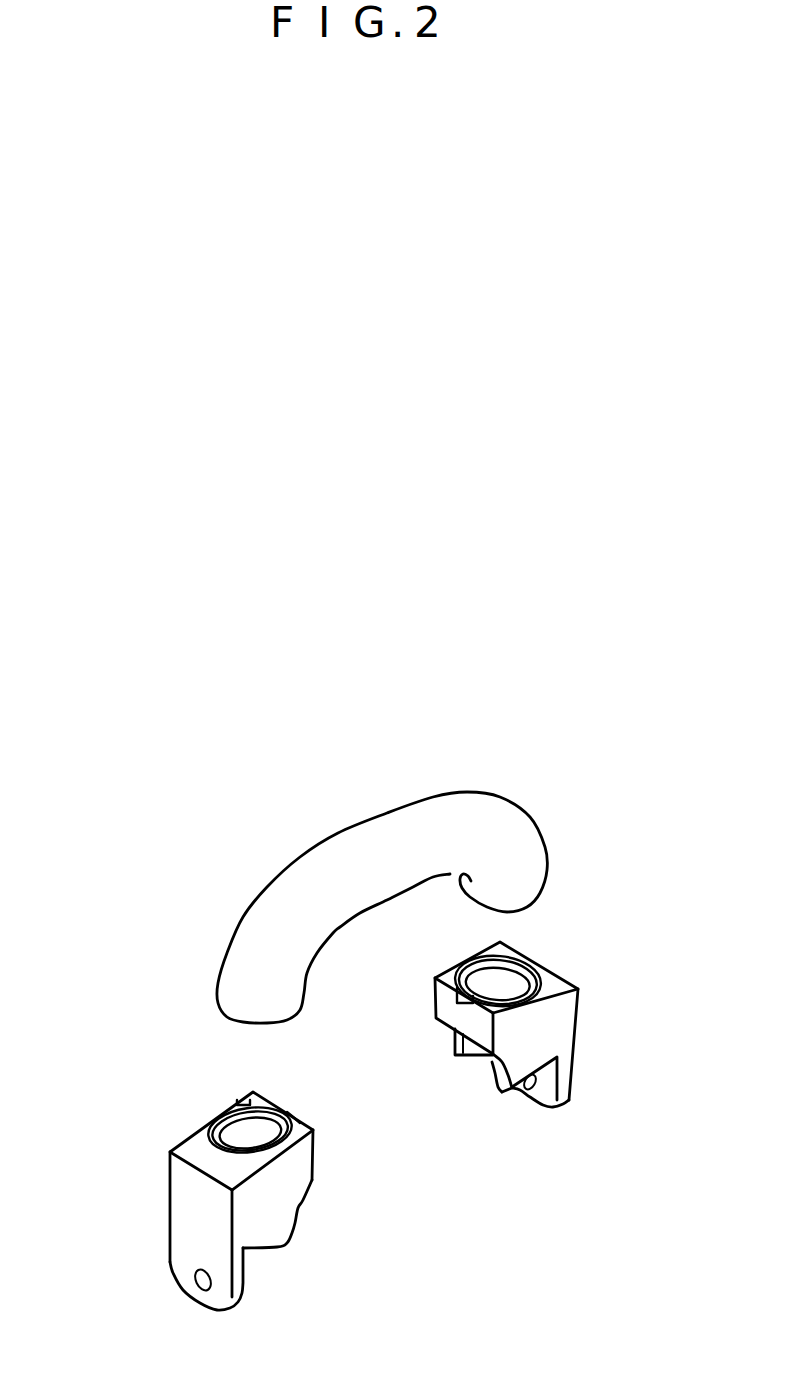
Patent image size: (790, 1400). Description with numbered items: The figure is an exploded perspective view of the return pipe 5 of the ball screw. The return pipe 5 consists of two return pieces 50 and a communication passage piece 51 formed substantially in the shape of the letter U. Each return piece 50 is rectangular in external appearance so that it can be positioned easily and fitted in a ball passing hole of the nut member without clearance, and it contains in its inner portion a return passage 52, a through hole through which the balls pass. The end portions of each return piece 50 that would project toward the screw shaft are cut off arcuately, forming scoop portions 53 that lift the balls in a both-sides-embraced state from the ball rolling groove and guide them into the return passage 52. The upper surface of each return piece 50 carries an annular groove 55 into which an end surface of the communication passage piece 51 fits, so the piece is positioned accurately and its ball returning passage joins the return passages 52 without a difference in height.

The return pipe 5 is at (450, 774).
The communication passage piece 51 is at (337, 833).
The return piece 50 is at (572, 988).
The return passage 52 is at (508, 975).
The scoop portion 53 is at (458, 1027).
The annular groove 55 is at (484, 958).